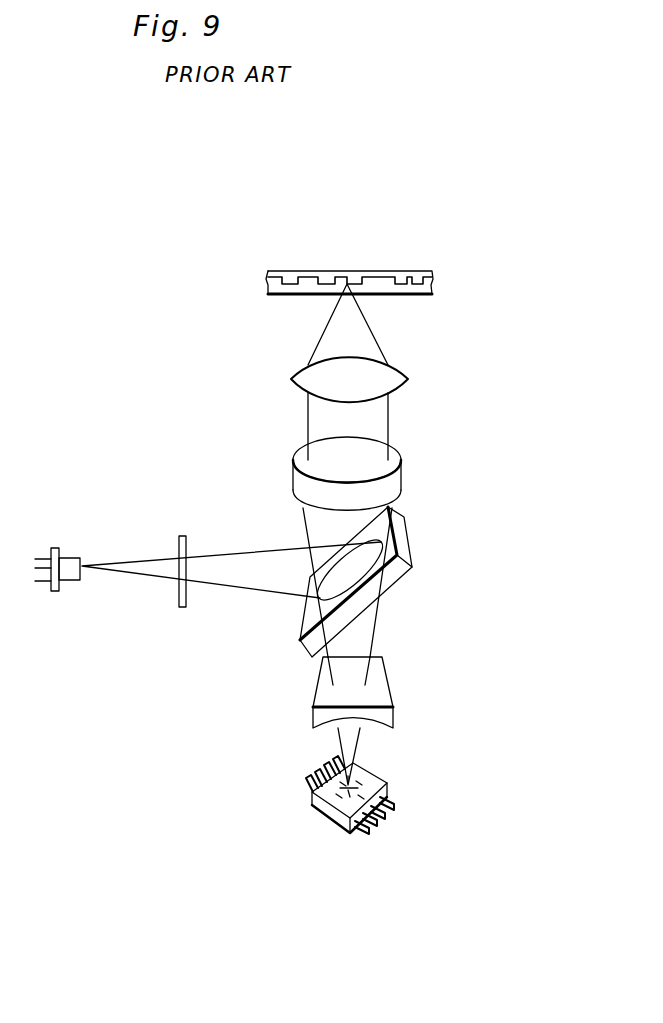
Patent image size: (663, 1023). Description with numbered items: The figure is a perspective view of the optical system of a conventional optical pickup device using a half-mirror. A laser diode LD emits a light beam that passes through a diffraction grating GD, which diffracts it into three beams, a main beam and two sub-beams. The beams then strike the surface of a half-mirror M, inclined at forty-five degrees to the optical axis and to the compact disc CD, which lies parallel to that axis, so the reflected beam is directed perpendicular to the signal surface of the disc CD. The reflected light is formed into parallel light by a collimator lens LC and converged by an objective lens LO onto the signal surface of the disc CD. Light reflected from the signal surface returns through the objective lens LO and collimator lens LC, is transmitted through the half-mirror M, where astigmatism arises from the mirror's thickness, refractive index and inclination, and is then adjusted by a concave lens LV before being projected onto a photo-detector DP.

The compact disc CD is at (300, 270).
The objective lens LO is at (408, 379).
The collimator lens LC is at (402, 473).
The half-mirror M is at (410, 582).
The laser diode LD is at (72, 558).
The diffraction grating GD is at (182, 536).
The concave lens LV is at (393, 708).
The photo-detector DP is at (385, 780).